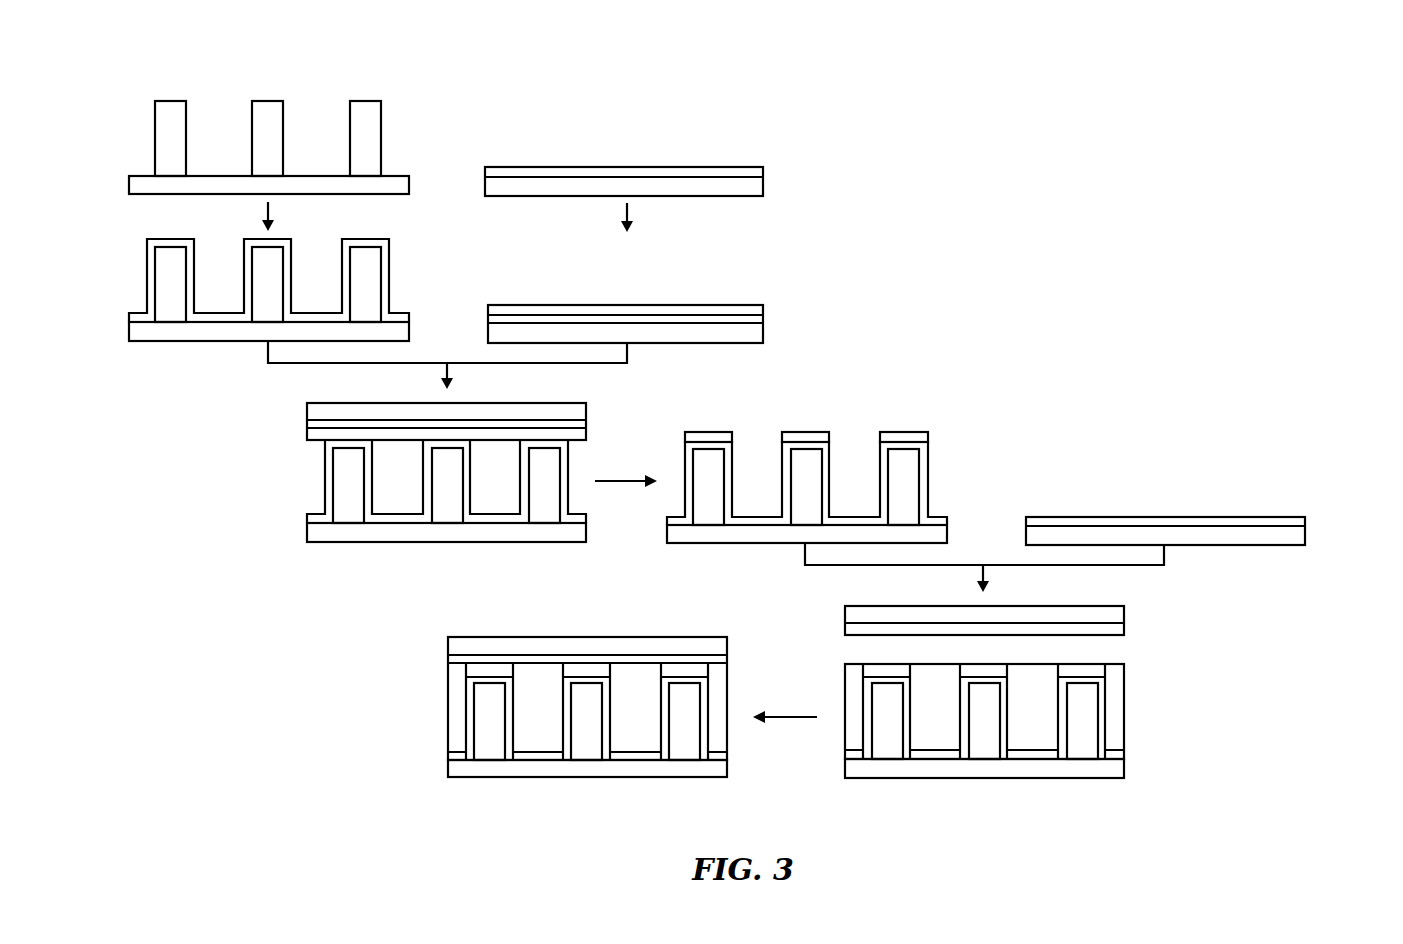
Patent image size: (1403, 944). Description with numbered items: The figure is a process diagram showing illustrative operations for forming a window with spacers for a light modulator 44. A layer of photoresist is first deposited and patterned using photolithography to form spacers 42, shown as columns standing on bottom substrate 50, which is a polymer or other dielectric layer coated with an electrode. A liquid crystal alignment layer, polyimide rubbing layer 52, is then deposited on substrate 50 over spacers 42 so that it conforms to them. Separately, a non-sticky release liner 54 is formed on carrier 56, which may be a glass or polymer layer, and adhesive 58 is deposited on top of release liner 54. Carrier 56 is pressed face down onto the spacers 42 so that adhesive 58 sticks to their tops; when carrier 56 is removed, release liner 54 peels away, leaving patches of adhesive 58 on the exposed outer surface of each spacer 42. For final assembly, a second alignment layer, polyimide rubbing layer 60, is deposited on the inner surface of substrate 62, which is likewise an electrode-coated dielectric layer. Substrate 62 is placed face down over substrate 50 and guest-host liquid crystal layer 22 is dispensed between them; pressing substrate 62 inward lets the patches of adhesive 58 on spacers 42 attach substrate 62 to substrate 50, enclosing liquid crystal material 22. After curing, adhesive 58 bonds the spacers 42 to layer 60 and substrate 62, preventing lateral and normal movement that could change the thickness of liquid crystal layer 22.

The liquid crystal layer 22 is at (1112, 740).
The spacers 42 is at (170, 111).
The light modulator 44 is at (433, 772).
The bottom substrate 50 is at (400, 188).
The polyimide rubbing layer 52 is at (388, 246).
The release liner 54 is at (758, 172).
The carrier 56 is at (758, 190).
The adhesive 58 is at (760, 310).
The polyimide rubbing layer 60 is at (1298, 520).
The substrate 62 is at (1298, 540).